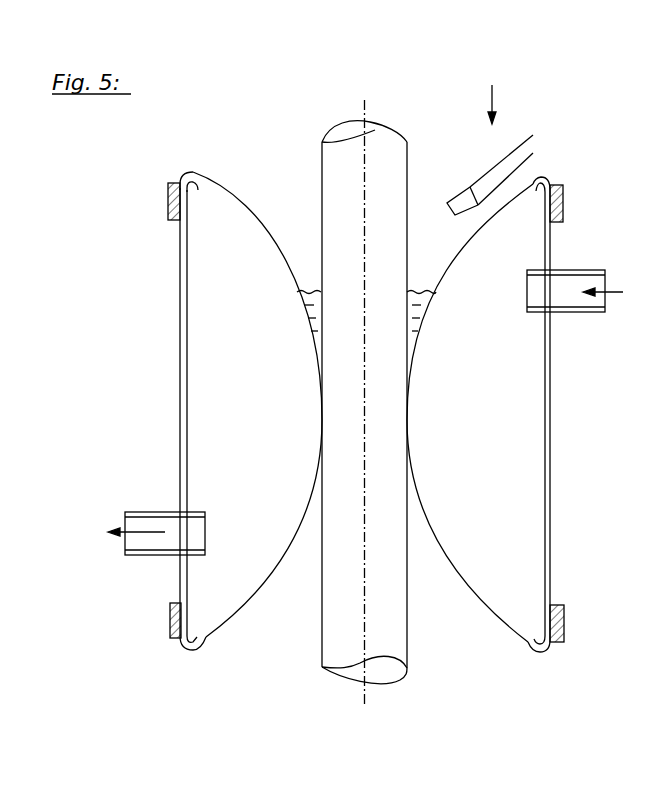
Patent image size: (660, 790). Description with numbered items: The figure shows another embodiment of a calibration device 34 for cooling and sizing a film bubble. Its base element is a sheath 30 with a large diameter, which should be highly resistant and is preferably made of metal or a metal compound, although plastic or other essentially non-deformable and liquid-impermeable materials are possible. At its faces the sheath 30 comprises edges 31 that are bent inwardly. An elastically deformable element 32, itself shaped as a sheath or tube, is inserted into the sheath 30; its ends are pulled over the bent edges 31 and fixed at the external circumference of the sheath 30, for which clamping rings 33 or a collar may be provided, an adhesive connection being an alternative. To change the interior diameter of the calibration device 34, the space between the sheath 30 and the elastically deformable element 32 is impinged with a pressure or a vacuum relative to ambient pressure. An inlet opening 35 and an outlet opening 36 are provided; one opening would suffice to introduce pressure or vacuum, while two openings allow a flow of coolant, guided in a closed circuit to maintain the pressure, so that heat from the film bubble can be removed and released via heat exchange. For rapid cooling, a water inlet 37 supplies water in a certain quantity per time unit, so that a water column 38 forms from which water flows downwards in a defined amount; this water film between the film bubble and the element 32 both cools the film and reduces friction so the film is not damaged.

The sheath 30 is at (180, 296).
The edges bent inwardly 31 is at (200, 183).
The elastically deformable element 32 is at (447, 260).
The clamping rings 33 is at (560, 205).
The calibration device 34 is at (492, 92).
The inlet opening 35 is at (588, 272).
The outlet opening 36 is at (157, 556).
The water inlet 37 is at (453, 197).
The water column 38 is at (422, 290).